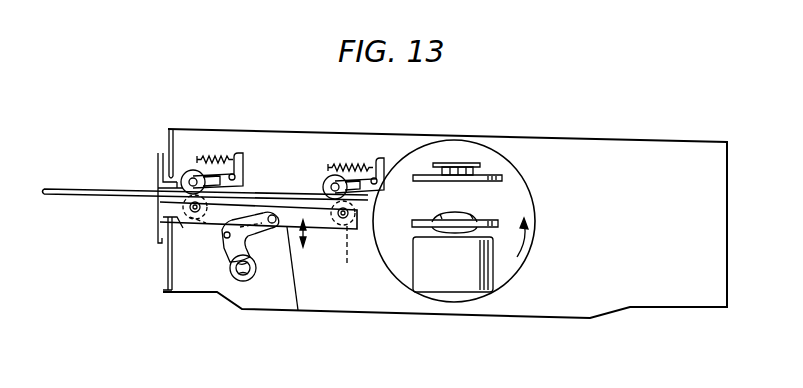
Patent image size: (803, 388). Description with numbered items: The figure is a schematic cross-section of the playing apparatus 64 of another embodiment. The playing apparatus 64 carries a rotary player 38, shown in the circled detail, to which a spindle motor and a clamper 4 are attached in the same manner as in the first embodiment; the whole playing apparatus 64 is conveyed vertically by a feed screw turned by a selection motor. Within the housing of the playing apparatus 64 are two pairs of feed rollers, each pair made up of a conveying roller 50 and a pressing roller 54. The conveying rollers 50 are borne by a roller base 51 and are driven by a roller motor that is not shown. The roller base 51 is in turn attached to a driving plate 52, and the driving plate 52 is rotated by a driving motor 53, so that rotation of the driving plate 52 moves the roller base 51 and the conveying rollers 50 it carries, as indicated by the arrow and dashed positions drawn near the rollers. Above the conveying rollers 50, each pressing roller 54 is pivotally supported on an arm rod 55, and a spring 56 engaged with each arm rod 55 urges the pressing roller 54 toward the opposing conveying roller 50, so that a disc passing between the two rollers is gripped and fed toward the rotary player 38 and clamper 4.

The clamper 4 is at (455, 162).
The rotary player 38 is at (507, 157).
The conveying rollers 50 is at (157, 238).
The roller base 51 is at (303, 285).
The driving plate 52 is at (229, 256).
The driving motor 53 is at (251, 281).
The pressing rollers 54 is at (170, 128).
The arm rods 55 is at (241, 170).
The spring 56 is at (217, 155).
The playing apparatus 64 is at (660, 152).